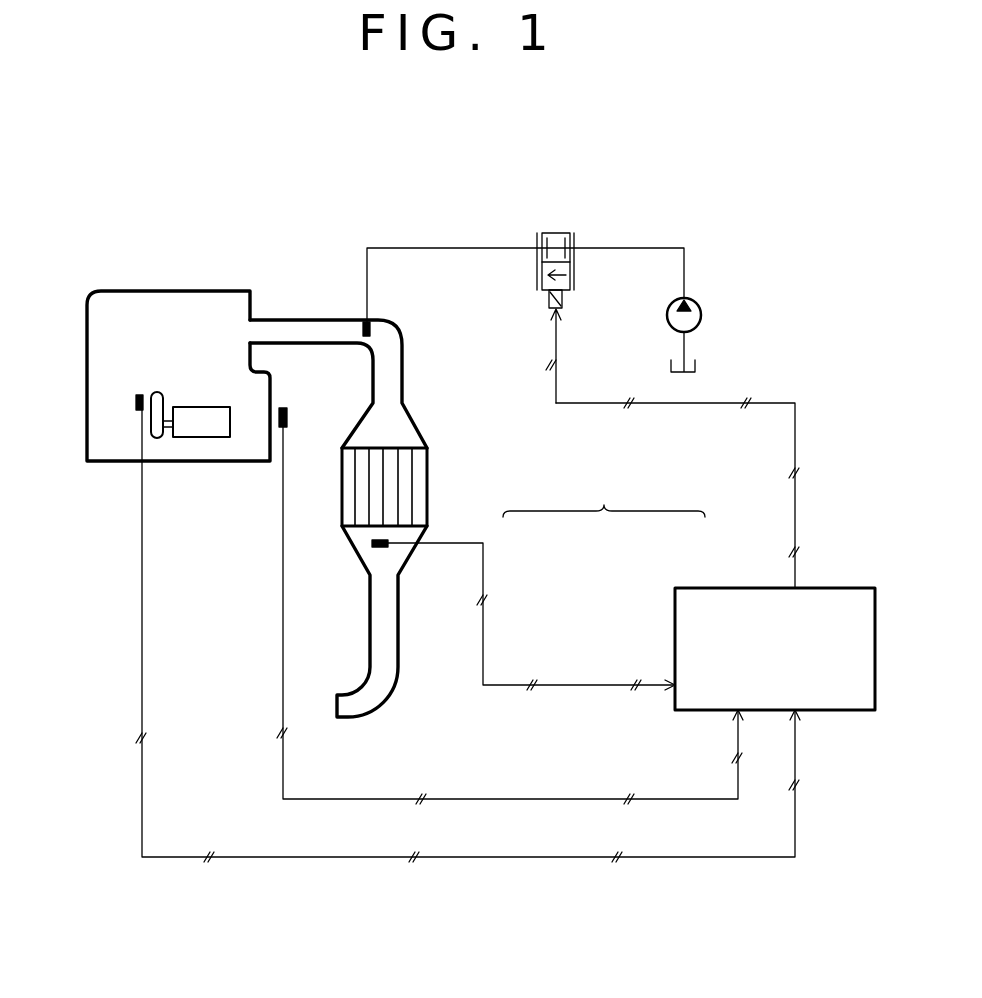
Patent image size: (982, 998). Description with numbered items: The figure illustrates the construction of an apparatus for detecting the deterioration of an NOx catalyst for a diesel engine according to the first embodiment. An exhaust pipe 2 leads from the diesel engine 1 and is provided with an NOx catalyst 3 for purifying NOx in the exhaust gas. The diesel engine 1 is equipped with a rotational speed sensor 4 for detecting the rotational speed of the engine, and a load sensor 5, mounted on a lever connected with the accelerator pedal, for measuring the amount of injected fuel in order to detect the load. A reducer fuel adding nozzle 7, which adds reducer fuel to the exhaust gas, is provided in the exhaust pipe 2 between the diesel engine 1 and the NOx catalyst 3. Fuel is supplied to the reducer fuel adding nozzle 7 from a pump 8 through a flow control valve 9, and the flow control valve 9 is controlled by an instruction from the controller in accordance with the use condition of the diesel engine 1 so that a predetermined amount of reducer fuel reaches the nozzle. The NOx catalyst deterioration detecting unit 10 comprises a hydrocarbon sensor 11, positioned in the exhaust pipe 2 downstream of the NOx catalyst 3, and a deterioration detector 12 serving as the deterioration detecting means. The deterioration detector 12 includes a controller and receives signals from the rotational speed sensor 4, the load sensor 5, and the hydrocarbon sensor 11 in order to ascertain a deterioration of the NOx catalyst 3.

The diesel engine 1 is at (147, 292).
The exhaust pipe 2 is at (320, 318).
The NOx catalyst 3 is at (420, 465).
The rotational speed sensor 4 is at (281, 428).
The load sensor 5 is at (138, 411).
The reducer fuel adding nozzle 7 is at (380, 317).
The pump 8 is at (702, 315).
The flow control valve 9 is at (568, 233).
The NOx catalyst deterioration detecting unit 10 is at (602, 528).
The hydrocarbon sensor 11 is at (388, 541).
The deterioration detector 12 is at (718, 592).